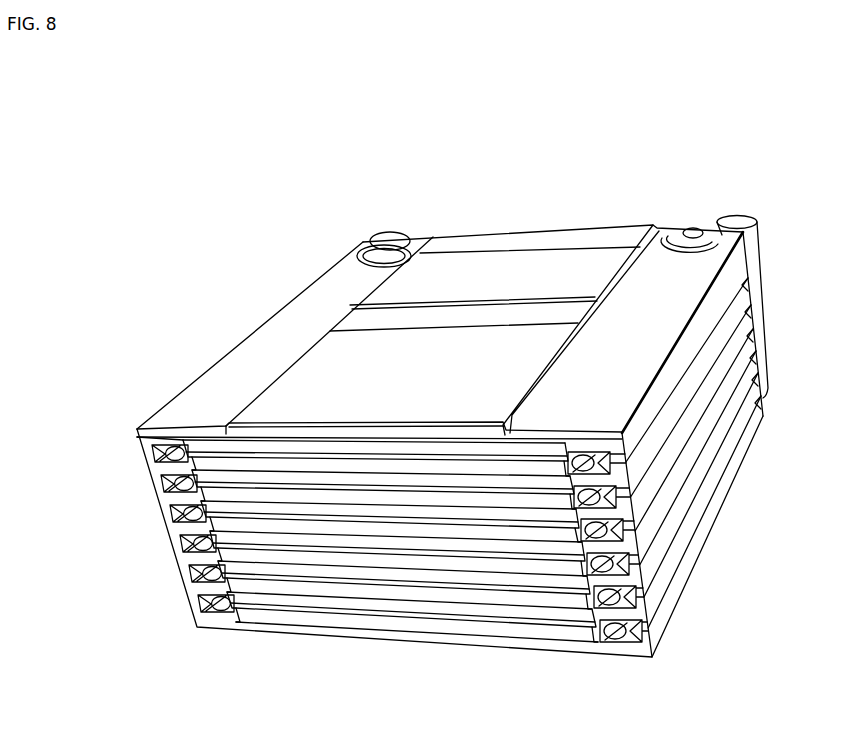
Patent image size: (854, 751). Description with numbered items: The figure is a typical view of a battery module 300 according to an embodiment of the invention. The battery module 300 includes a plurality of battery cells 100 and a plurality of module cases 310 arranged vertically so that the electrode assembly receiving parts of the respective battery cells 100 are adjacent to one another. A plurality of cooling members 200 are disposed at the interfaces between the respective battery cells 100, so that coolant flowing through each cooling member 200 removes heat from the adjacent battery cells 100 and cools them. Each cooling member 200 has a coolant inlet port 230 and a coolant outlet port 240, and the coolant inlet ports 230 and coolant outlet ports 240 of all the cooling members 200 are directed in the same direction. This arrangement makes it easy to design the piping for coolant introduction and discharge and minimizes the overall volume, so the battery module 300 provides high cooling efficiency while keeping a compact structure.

The battery cell 100 is at (407, 620).
The cooling member 200 is at (340, 611).
The coolant inlet port 230 is at (223, 603).
The coolant outlet port 240 is at (615, 633).
The battery module 300 is at (55, 189).
The module case 310 is at (178, 413).